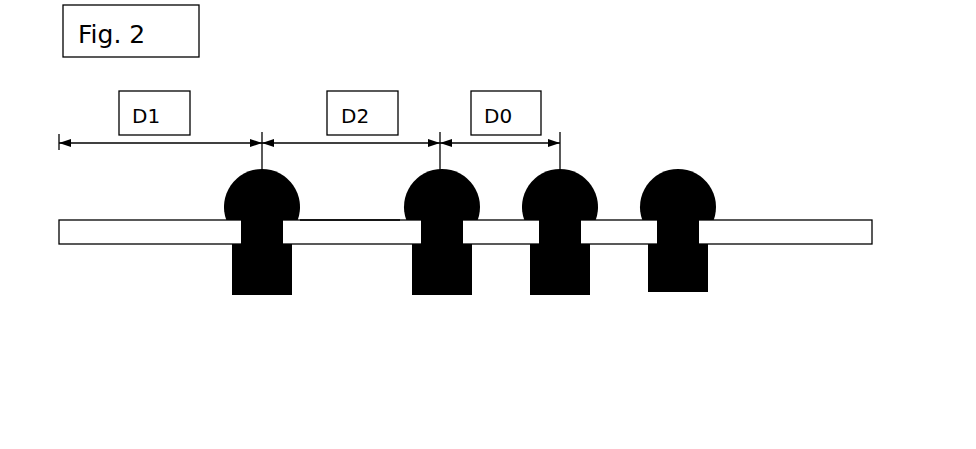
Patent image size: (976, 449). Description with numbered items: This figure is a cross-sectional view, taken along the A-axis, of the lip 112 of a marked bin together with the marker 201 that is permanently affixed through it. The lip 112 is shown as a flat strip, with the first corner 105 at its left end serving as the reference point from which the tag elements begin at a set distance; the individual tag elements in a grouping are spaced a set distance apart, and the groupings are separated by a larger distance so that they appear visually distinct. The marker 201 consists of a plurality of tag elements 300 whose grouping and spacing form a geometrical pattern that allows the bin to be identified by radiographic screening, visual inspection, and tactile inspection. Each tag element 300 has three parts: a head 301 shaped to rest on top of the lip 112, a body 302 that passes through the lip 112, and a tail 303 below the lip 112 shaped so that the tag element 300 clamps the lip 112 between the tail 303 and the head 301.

The first corner 105 is at (59, 143).
The lip 112 is at (318, 220).
The marker 201 is at (562, 242).
The tag element 300 is at (773, 218).
The head 301 is at (679, 169).
The body 302 is at (716, 219).
The tail 303 is at (755, 311).